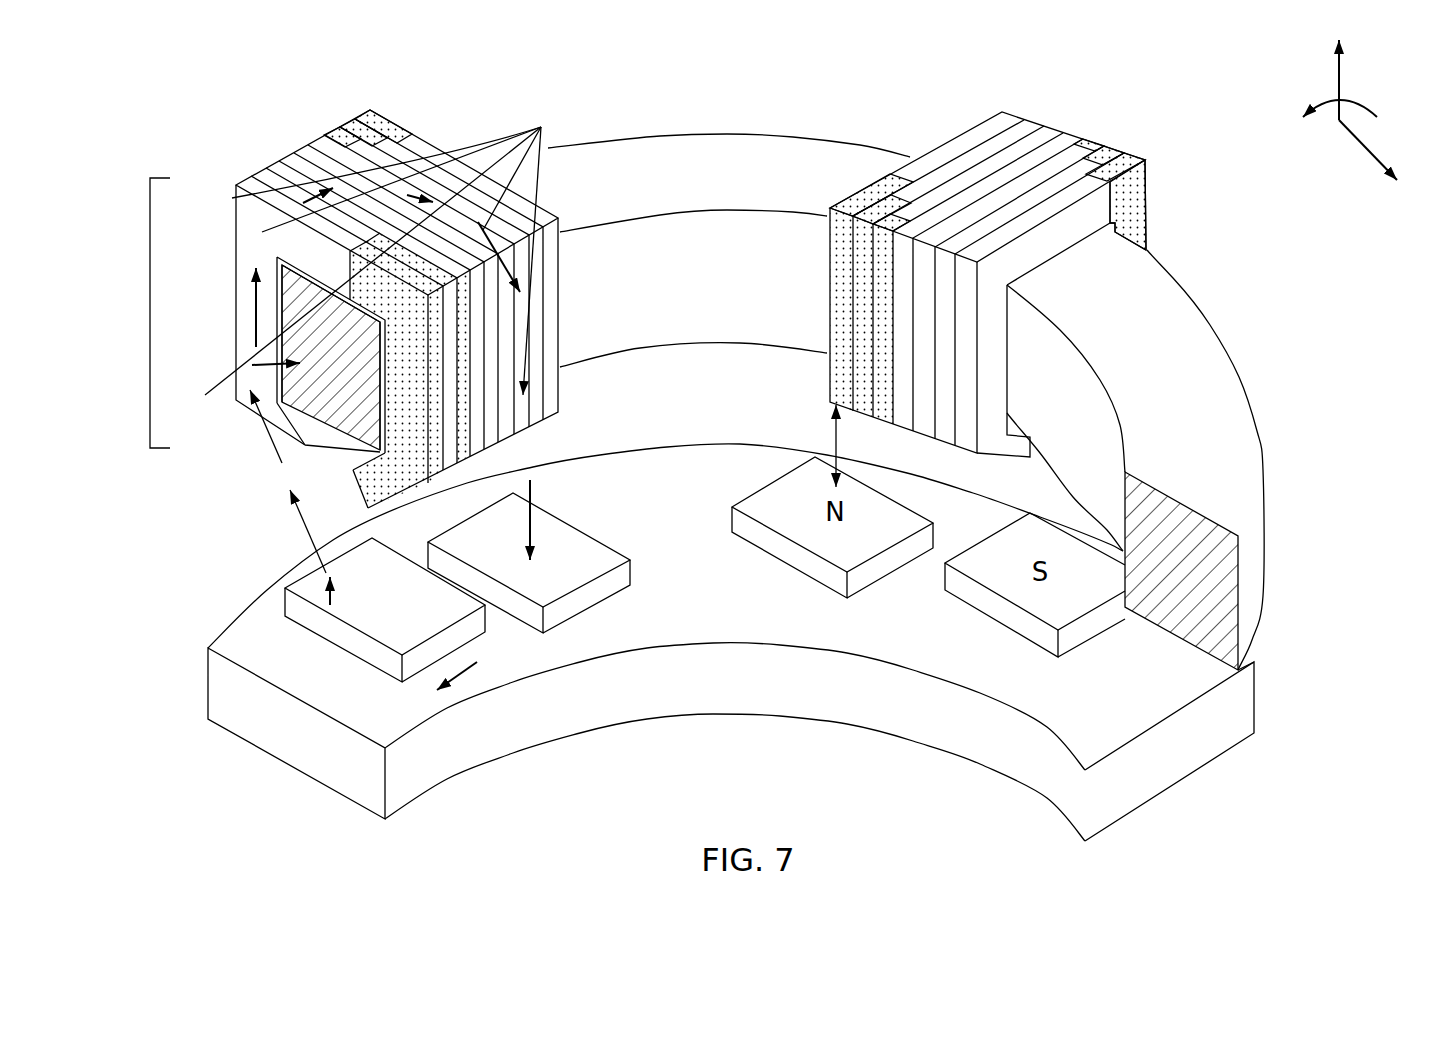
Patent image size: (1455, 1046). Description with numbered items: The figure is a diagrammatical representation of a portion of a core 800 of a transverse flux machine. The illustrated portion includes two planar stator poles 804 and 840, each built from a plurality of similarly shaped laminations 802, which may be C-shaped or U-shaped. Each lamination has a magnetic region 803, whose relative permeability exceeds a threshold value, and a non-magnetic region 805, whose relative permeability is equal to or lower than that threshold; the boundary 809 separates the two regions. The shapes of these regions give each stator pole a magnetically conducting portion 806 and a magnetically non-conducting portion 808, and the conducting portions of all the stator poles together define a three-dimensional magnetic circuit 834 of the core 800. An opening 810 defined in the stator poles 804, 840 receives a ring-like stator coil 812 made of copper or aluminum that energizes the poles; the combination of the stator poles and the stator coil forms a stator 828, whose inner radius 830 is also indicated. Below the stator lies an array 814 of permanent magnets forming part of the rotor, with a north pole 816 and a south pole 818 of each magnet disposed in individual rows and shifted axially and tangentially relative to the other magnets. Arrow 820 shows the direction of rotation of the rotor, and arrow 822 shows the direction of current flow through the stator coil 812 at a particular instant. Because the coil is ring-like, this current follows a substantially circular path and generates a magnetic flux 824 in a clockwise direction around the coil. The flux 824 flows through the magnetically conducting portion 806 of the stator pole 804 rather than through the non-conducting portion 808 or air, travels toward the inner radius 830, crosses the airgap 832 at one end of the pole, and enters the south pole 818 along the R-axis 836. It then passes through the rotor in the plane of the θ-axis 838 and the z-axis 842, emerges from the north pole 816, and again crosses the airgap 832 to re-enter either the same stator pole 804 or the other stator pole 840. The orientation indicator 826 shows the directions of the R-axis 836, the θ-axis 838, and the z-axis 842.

The core 800 is at (1280, 868).
The laminations 802 is at (318, 153).
The magnetic region 803 is at (246, 198).
The stator pole 804 is at (642, 286).
The non-magnetic region 805 is at (358, 474).
The magnetically conducting portion 806 is at (245, 246).
The magnetically non-conducting portion 808 is at (375, 128).
The boundary 809 is at (262, 232).
The opening 810 is at (338, 443).
The stator coil 812 is at (752, 140).
The array of permanent magnets 814 is at (733, 695).
The north pole 816 is at (290, 580).
The south pole 818 is at (613, 583).
The arrow 820 is at (477, 662).
The arrow 822 is at (252, 365).
The magnetic flux 824 is at (387, 247).
The orientation of R-axis, θ-axis, and z-axis 826 is at (1359, 127).
The stator 828 is at (150, 315).
The inner radius 830 is at (520, 442).
The airgap 832 is at (837, 437).
The 3D magnetic circuit 834 is at (250, 320).
The R-axis 836 is at (1336, 95).
The θ-axis 838 is at (1312, 124).
The stator pole 840 is at (882, 160).
The z-axis 842 is at (1366, 155).